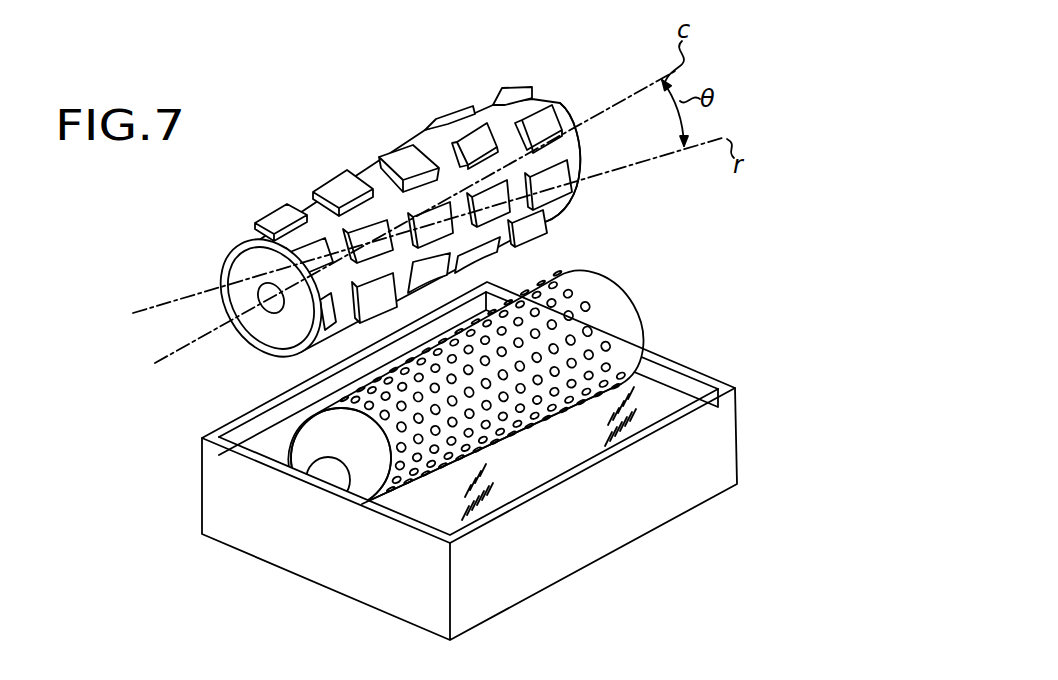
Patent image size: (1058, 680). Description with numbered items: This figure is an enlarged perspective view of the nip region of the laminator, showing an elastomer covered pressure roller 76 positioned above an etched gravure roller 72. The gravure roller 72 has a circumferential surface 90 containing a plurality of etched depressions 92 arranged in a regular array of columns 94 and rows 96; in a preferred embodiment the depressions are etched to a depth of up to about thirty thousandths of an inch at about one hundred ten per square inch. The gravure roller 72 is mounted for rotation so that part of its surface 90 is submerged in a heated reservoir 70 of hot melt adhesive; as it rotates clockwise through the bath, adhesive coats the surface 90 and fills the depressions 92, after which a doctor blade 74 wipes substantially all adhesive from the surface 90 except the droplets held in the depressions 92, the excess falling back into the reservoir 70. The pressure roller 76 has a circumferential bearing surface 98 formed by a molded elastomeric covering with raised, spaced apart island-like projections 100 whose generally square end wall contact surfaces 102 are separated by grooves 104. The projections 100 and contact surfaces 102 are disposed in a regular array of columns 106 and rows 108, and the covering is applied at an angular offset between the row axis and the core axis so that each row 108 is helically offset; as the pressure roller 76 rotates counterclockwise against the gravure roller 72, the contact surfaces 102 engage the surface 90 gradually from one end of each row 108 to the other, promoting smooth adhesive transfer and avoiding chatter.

The heated reservoir 70 is at (707, 443).
The etched gravure roller 72 is at (290, 447).
The doctor blade 74 is at (305, 458).
The elastomer covered pressure roller 76 is at (220, 297).
The circumferential surface 90 is at (348, 482).
The etched depressions 92 is at (647, 343).
The columns 94 is at (500, 447).
The rows 96 is at (577, 272).
The circumferential bearing surface 98 is at (494, 105).
The island-like projections 100 is at (450, 158).
The raised contact surfaces 102 is at (478, 142).
The grooves 104 is at (376, 181).
The columns 106 is at (387, 142).
The rows 108 is at (562, 105).